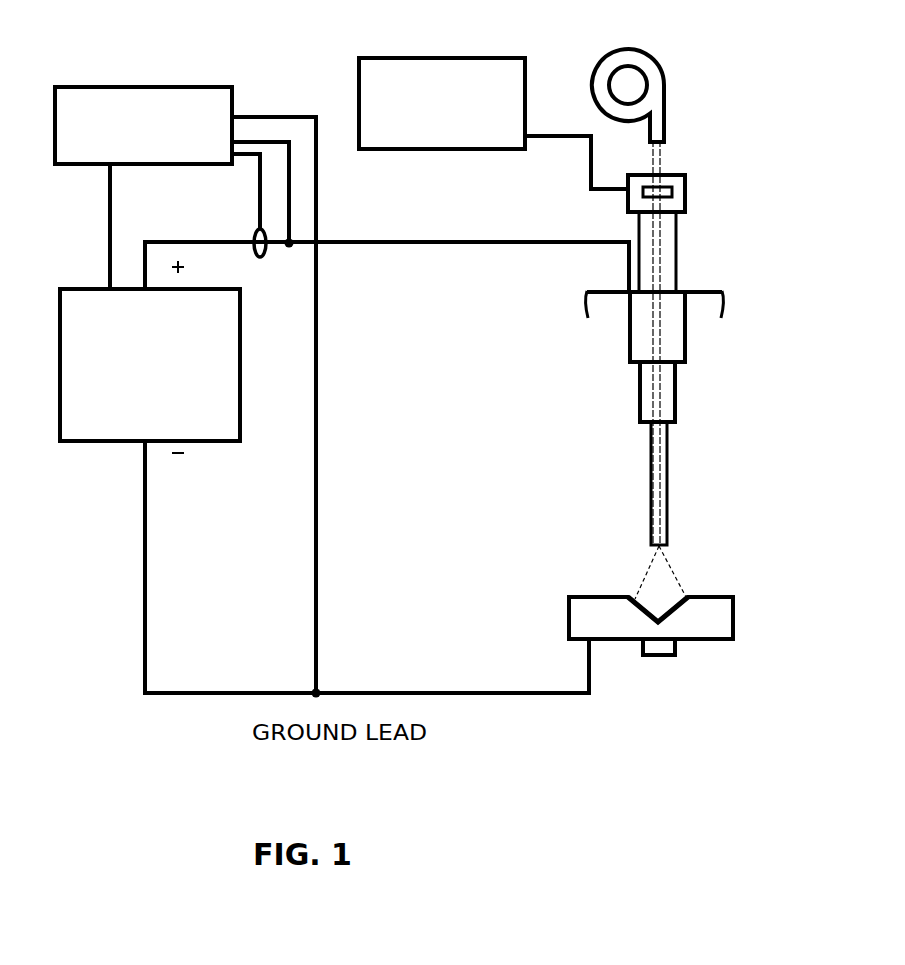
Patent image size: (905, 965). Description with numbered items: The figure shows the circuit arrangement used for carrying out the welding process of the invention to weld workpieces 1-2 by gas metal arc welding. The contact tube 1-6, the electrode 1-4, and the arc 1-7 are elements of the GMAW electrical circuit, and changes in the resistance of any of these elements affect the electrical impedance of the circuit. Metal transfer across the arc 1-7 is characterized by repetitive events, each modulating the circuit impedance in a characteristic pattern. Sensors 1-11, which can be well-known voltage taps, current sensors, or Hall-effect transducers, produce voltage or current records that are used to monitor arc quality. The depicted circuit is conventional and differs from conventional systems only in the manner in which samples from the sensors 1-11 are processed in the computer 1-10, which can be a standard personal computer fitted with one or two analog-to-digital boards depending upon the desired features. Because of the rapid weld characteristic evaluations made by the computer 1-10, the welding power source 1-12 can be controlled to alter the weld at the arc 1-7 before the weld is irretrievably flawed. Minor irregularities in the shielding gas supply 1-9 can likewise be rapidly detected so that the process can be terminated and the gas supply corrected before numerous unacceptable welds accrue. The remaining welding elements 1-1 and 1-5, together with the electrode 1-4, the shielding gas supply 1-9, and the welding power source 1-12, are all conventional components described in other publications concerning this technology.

The welding element 1-1 is at (722, 300).
The workpieces 1-2 is at (733, 625).
The electrode 1-4 is at (668, 520).
The welding element 1-5 is at (648, 52).
The contact tube 1-6 is at (676, 393).
The arc 1-7 is at (645, 578).
The shielding gas supply 1-9 is at (441, 58).
The computer 1-10 is at (133, 87).
The sensors 1-11 is at (262, 258).
The welding power source 1-12 is at (110, 441).